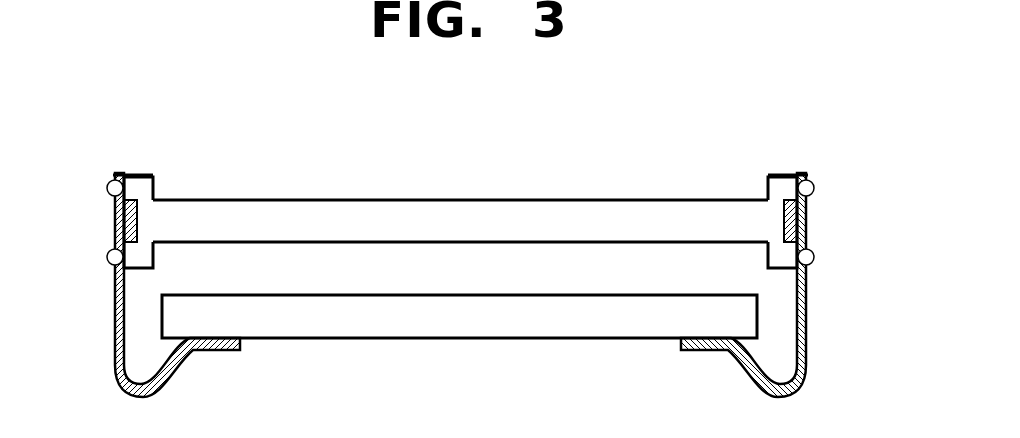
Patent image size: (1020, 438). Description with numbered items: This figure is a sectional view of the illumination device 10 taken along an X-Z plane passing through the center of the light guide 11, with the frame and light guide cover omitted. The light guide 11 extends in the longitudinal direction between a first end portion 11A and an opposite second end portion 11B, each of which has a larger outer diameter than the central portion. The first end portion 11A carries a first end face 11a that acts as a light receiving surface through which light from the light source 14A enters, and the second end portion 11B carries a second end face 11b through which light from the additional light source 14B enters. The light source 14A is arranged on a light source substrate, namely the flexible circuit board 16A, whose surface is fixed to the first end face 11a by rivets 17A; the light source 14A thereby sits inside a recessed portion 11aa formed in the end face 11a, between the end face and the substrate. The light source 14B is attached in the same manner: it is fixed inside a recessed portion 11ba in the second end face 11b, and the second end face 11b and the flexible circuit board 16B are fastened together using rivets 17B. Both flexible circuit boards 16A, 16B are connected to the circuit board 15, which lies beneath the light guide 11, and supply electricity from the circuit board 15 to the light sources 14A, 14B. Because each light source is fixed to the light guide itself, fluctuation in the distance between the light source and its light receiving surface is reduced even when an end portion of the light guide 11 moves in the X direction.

The illumination device 10 is at (468, 110).
The light guide 11 is at (386, 200).
The first end portion 11A is at (243, 126).
The second end portion 11B is at (688, 124).
The first end face 11a is at (123, 183).
The second end face 11b is at (797, 183).
The recessed portion 11aa is at (137, 216).
The recessed portion 11ba is at (783, 217).
The light source 14A is at (126, 222).
The light source 14B is at (795, 222).
The circuit board 15 is at (385, 338).
The flexible circuit board 16A is at (114, 358).
The flexible circuit board 16B is at (807, 358).
The rivets 17A is at (107, 188).
The rivets 17B is at (814, 188).